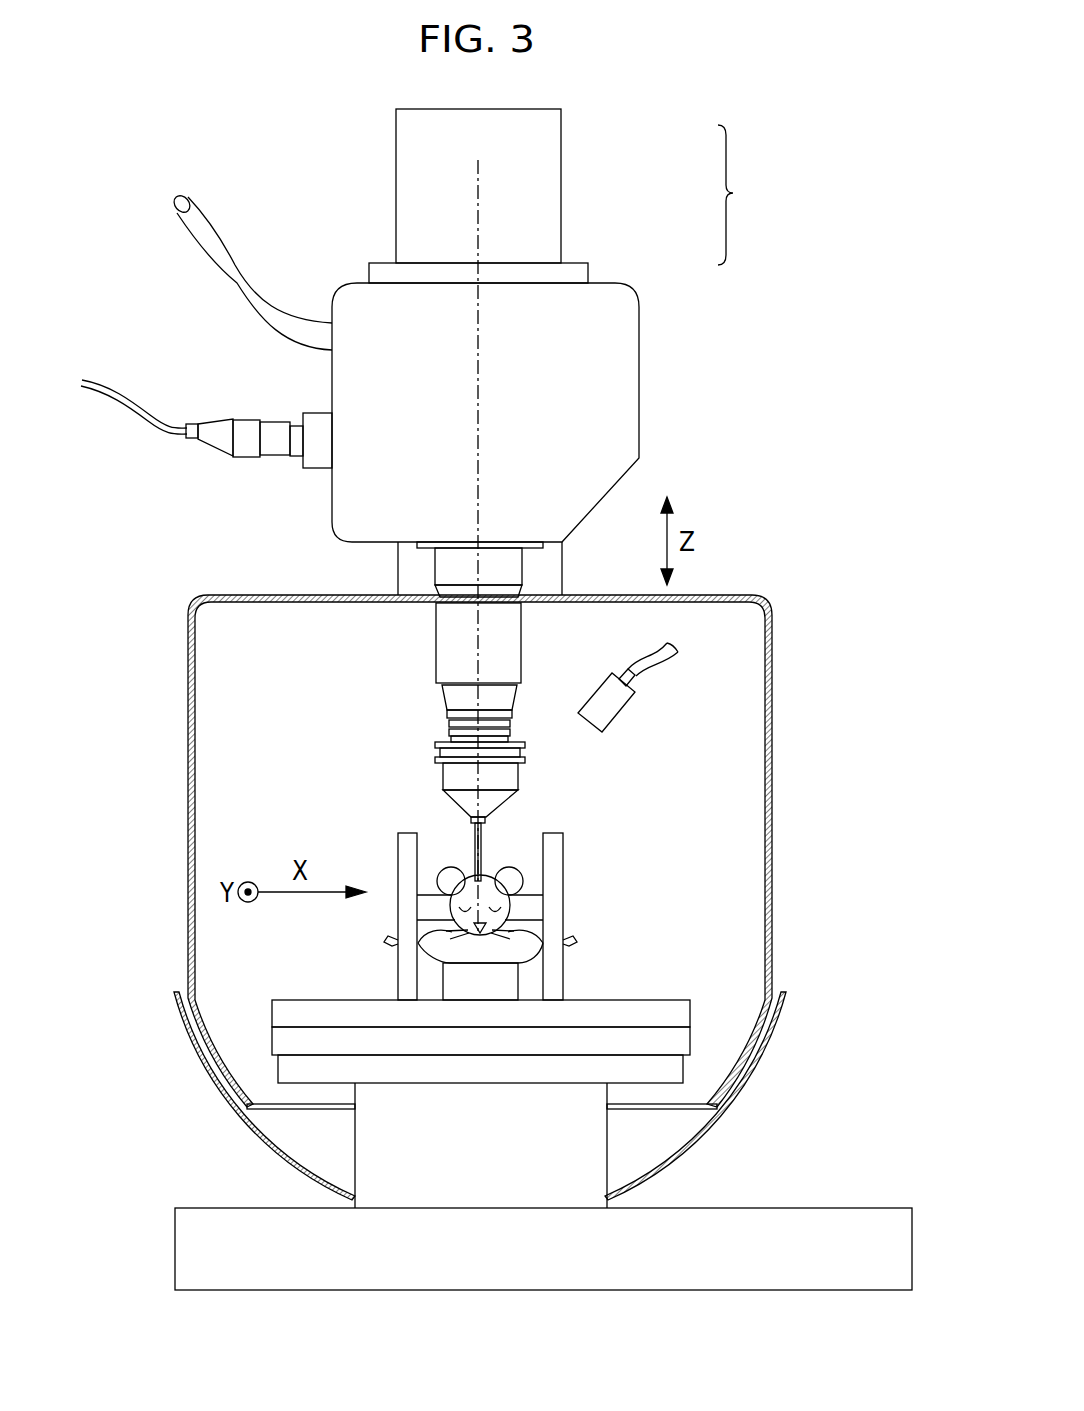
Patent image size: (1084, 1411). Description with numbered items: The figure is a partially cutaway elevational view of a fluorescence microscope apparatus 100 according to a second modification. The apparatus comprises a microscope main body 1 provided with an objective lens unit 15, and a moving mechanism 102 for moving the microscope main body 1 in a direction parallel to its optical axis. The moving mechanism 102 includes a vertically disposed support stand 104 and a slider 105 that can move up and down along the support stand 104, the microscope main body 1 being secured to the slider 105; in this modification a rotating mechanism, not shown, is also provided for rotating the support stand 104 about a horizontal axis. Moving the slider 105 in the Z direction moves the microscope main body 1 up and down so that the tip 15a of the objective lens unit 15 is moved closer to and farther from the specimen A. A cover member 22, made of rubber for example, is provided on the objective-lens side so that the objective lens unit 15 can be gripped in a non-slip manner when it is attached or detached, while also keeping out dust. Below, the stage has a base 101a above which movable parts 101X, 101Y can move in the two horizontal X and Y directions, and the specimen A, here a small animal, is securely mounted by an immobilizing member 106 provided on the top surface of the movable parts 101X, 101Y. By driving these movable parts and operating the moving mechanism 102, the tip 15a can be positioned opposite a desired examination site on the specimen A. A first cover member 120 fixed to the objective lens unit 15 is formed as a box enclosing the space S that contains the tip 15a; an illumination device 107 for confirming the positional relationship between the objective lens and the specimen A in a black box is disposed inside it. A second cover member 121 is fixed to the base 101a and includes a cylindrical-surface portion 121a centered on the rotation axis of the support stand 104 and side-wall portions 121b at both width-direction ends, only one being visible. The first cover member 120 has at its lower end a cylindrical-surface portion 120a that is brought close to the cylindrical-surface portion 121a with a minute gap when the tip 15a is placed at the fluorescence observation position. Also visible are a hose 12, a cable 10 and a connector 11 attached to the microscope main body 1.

The microscope main body 1 is at (312, 523).
The signal cable 10 is at (150, 415).
The connector 11 is at (225, 428).
The hose 12 is at (240, 262).
The objective lens unit 15 is at (518, 778).
The tip of the objective lens unit 15a is at (470, 884).
The cover member 22 is at (522, 637).
The fluorescence microscope apparatus 100 is at (797, 287).
The movable part 101X is at (686, 1000).
The movable part 101Y is at (690, 1040).
The base 101a is at (808, 1207).
The moving mechanism 102 is at (747, 195).
The support stand 104 is at (562, 173).
The slider 105 is at (590, 272).
The immobilizing member 106 is at (566, 965).
The illumination device 107 is at (620, 712).
The first cover member 120 is at (772, 688).
The cylindrical-surface portion 120a is at (195, 1037).
The second cover member 121 is at (687, 1157).
The cylindrical-surface portion 121a is at (208, 1079).
The side-wall portion 121b is at (300, 1140).
The space S is at (223, 663).
The specimen A is at (442, 943).